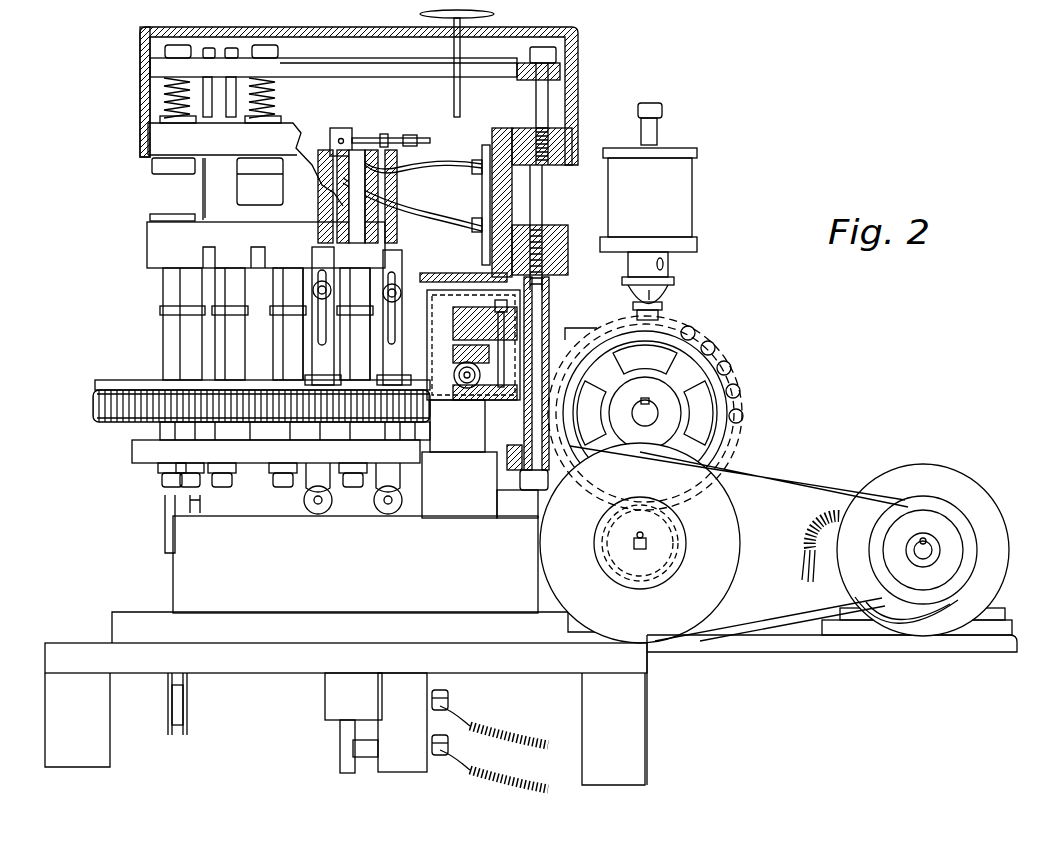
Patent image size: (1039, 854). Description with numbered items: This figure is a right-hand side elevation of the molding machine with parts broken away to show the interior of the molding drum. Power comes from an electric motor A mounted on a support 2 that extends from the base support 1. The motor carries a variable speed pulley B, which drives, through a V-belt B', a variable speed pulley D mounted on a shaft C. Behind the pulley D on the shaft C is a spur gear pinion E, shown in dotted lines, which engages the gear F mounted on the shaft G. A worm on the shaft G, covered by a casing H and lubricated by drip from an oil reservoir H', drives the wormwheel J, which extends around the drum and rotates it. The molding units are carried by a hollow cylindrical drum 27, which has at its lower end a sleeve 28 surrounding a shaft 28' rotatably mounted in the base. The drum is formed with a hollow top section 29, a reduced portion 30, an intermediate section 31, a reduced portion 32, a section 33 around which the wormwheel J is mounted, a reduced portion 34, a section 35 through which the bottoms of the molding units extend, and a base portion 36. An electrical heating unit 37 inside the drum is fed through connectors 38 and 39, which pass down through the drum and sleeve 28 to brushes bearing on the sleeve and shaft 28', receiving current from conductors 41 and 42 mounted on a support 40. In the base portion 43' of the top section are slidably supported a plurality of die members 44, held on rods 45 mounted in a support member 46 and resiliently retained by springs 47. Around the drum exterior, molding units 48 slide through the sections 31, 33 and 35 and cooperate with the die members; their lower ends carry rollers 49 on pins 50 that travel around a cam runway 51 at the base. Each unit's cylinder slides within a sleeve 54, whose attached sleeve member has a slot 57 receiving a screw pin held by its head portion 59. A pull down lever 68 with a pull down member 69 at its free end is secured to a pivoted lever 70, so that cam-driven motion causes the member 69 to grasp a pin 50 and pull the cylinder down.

The base support 1 is at (644, 746).
The support 2 is at (864, 652).
The hollow cylindrical drum 27 is at (578, 40).
The sleeve 28 is at (352, 722).
The shaft 28' is at (319, 746).
The hollow top section 29 is at (130, 66).
The reduced portion 30 is at (205, 190).
The intermediate section 31 is at (150, 250).
The reduced portion 32 is at (165, 336).
The section 33 is at (108, 386).
The reduced portion 34 is at (160, 432).
The section 35 is at (130, 455).
The base portion 36 is at (504, 518).
The electrical heating unit 37 is at (398, 218).
The electrical connector 38 is at (448, 160).
The electrical connector 39 is at (455, 196).
The support 40 is at (430, 688).
The conductor 41 is at (522, 737).
The conductor 42 is at (510, 782).
The base portion of the cylindrical top section 43' is at (245, 155).
The die member 44 is at (140, 168).
The rod 45 is at (271, 98).
The support member 46 is at (338, 58).
The spring 47 is at (276, 84).
The molding unit 48 is at (305, 353).
The roller 49 is at (330, 500).
The pin 50 is at (315, 506).
The cam runway 51 is at (187, 562).
The sleeve 54 is at (150, 217).
The slot 57 is at (322, 312).
The head portion 59 is at (318, 282).
The pull down lever 68 is at (170, 604).
The pull down member 69 is at (155, 526).
The lever 70 is at (172, 708).
The electric motor A is at (950, 468).
The variable speed pulley B is at (945, 542).
The V-belt B' is at (739, 539).
The shaft C is at (650, 543).
The variable speed pulley D is at (742, 530).
The spur gear pinion E is at (676, 568).
The gear F is at (745, 410).
The shaft G is at (654, 406).
The casing H is at (714, 364).
The oil reservoir H' is at (668, 211).
The wormwheel J is at (84, 409).